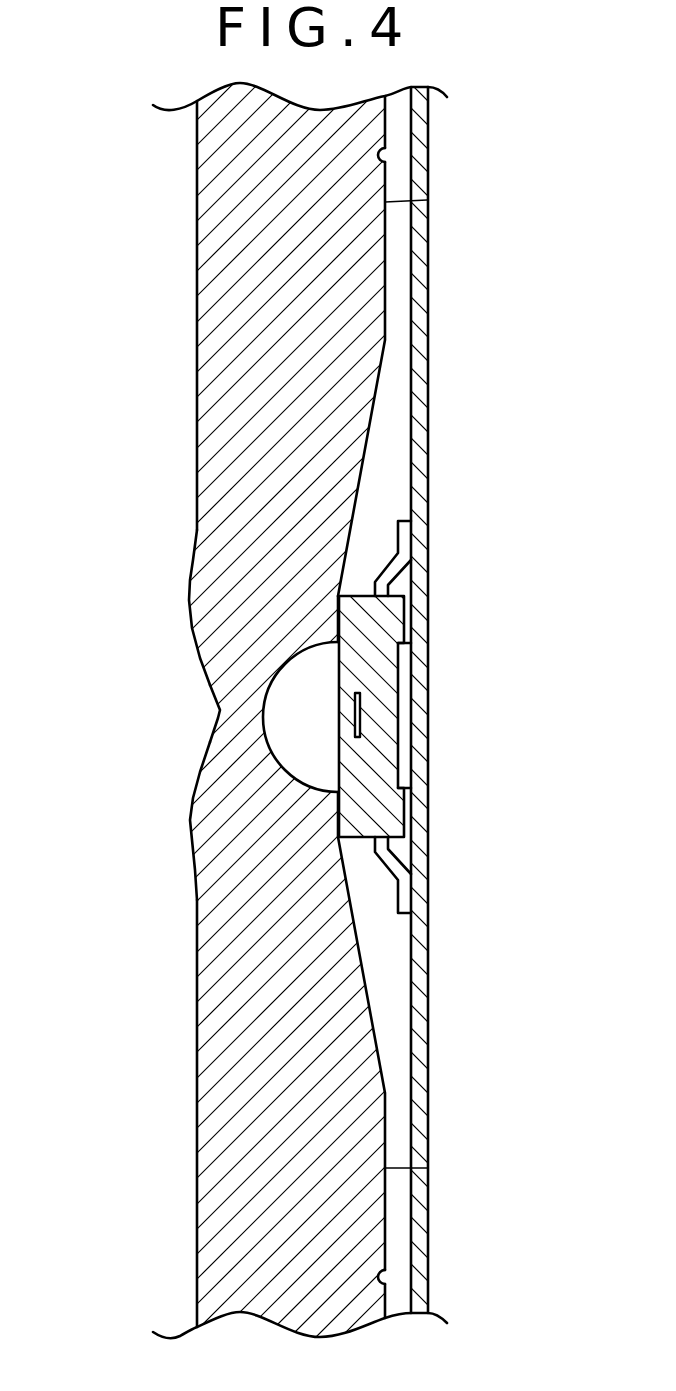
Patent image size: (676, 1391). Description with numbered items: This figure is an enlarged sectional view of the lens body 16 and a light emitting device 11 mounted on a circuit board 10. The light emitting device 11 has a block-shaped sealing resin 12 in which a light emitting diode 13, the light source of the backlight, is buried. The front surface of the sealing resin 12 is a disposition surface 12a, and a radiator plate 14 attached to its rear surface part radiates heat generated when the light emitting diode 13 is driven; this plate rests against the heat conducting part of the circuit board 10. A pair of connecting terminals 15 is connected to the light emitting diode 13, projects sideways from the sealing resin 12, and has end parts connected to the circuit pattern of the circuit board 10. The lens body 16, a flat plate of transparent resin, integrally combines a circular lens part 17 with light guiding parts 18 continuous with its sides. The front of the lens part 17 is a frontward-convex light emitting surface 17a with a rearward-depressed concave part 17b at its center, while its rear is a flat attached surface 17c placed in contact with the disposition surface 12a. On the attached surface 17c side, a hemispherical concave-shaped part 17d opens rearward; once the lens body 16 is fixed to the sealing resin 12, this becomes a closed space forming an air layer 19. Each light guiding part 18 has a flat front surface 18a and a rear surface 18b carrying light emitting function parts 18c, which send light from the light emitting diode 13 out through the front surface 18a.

The circuit board 10 is at (417, 263).
The light emitting device 11 is at (393, 623).
The sealing resin 12 is at (397, 634).
The disposition surface 12a is at (212, 788).
The light emitting diode 13 is at (360, 722).
The radiator plate 14 is at (405, 773).
The connecting terminals 15 is at (402, 533).
The lens body 16 is at (203, 312).
The lens part 17 is at (200, 607).
The light emitting surface 17a is at (195, 655).
The concave part 17b is at (220, 715).
The attached surface 17c is at (339, 607).
The concave-shaped part 17d is at (317, 667).
The light guiding part 18 is at (217, 183).
The front surface 18a is at (197, 228).
The rear surface 18b is at (427, 200).
The light emitting function parts 18c is at (385, 155).
The air layer 19 is at (324, 726).